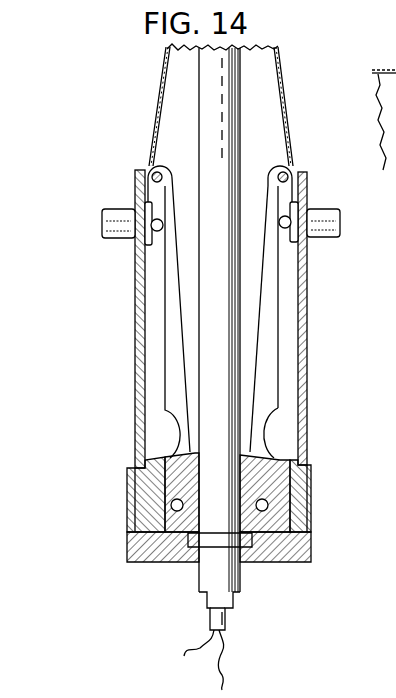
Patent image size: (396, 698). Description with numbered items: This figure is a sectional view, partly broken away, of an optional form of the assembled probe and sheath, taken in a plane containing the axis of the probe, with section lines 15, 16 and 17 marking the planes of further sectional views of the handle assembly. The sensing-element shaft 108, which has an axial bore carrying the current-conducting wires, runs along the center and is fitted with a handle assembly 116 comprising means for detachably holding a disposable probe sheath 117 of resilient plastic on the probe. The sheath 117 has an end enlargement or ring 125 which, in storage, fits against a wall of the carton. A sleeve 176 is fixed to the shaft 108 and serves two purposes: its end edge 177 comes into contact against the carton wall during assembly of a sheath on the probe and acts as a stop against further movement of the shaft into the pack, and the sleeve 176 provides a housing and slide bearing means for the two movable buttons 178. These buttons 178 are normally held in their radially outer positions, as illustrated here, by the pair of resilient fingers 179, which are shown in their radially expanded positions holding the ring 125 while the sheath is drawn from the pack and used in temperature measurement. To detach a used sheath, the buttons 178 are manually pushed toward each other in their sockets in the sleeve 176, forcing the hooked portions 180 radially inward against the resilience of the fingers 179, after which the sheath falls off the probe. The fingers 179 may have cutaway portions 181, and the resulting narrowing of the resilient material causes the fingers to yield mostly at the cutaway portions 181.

The section line 15- 15 is at (93, 157).
The section line 16- 16 is at (187, 145).
The section line 17- 17 is at (110, 505).
The sensing-element shaft 108 is at (224, 150).
The handle assembly 116 is at (107, 207).
The disposable probe sheath 117 is at (290, 75).
The end enlargement or ring 125 is at (157, 150).
The sleeve 176 is at (307, 306).
The end edge 177 is at (302, 180).
The movable buttons 178 is at (319, 241).
The resilient fingers 179 is at (273, 378).
The hooked portions 180 is at (290, 147).
The cutaway portions 181 is at (264, 435).